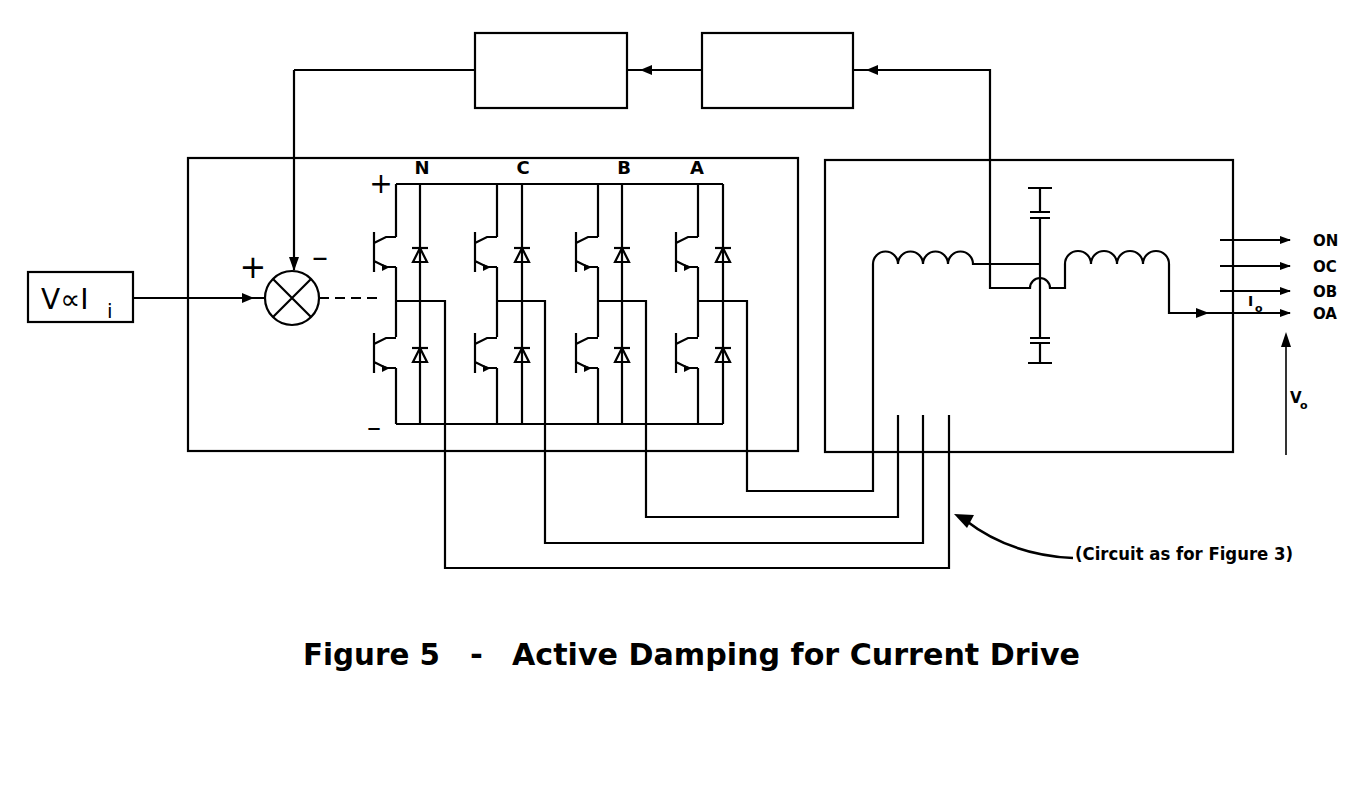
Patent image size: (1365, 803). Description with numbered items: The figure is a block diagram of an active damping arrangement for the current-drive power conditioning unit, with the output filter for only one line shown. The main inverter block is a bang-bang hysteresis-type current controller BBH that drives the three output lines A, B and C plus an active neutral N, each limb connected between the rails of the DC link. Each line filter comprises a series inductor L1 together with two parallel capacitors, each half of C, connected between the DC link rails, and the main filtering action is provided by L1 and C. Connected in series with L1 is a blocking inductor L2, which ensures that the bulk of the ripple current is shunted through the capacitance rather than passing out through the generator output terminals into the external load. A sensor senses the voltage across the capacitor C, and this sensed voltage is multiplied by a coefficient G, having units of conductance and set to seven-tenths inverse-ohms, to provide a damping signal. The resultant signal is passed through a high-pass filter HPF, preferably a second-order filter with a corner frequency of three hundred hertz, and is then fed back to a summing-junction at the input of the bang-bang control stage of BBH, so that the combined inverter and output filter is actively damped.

The high-pass filter HPF is at (551, 70).
The coefficient G is at (777, 70).
The bang-bang hysteresis-type current controller BBH is at (276, 361).
The series inductor L1 is at (956, 232).
The blocking inductor L2 is at (1177, 256).
The capacitors C is at (1057, 275).